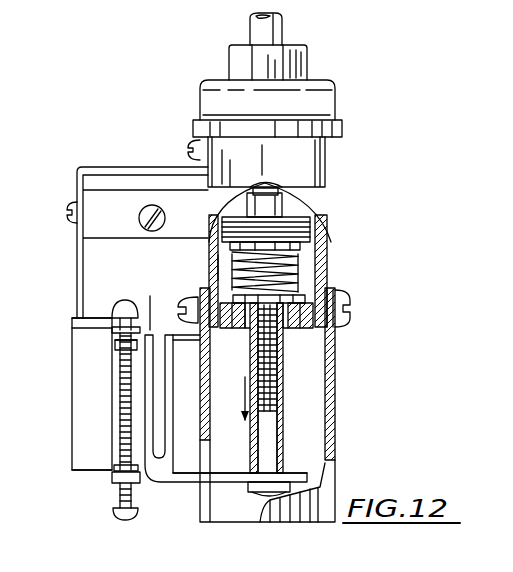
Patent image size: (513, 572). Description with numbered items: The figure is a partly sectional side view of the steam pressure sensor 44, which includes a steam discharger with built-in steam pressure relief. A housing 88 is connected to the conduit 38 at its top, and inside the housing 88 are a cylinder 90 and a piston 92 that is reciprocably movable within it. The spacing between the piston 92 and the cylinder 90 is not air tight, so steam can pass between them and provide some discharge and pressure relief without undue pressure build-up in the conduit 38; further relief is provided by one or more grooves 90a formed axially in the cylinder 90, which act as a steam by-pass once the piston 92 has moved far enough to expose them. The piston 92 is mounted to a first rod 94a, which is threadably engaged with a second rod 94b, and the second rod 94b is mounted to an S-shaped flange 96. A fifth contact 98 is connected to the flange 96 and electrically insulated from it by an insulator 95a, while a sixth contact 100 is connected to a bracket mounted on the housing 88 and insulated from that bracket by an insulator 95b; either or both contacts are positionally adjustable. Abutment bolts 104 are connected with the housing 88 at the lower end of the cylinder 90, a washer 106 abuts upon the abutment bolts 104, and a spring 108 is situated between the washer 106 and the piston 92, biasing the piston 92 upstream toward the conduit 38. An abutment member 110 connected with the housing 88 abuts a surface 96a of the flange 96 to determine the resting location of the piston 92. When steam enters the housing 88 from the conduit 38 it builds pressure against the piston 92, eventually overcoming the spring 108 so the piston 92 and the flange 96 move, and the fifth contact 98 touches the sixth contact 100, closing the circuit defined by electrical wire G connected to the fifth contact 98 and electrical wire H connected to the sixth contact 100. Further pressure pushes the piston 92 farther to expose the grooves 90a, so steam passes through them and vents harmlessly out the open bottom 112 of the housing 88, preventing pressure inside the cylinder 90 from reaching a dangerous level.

The conduit 38 is at (283, 32).
The steam pressure sensor 44 is at (346, 103).
The housing 88 is at (327, 158).
The piston 92 is at (313, 216).
The cylinder 90 is at (320, 233).
The grooves 90a is at (226, 272).
The first rod 94a is at (290, 283).
The second rod 94b is at (277, 412).
The abutment bolts 104 is at (315, 345).
The washer 106 is at (332, 292).
The spring 108 is at (313, 285).
The open bottom 112 is at (238, 515).
The insulator 95a is at (64, 318).
The insulator 95b is at (110, 476).
The sixth contact 100 is at (125, 378).
The fifth contact 98 is at (127, 388).
The abutment member 110 is at (140, 447).
The S-shaped flange 96 is at (167, 487).
The surface 96a is at (190, 487).
The electrical wire G is at (150, 296).
The electrical wire H is at (75, 493).